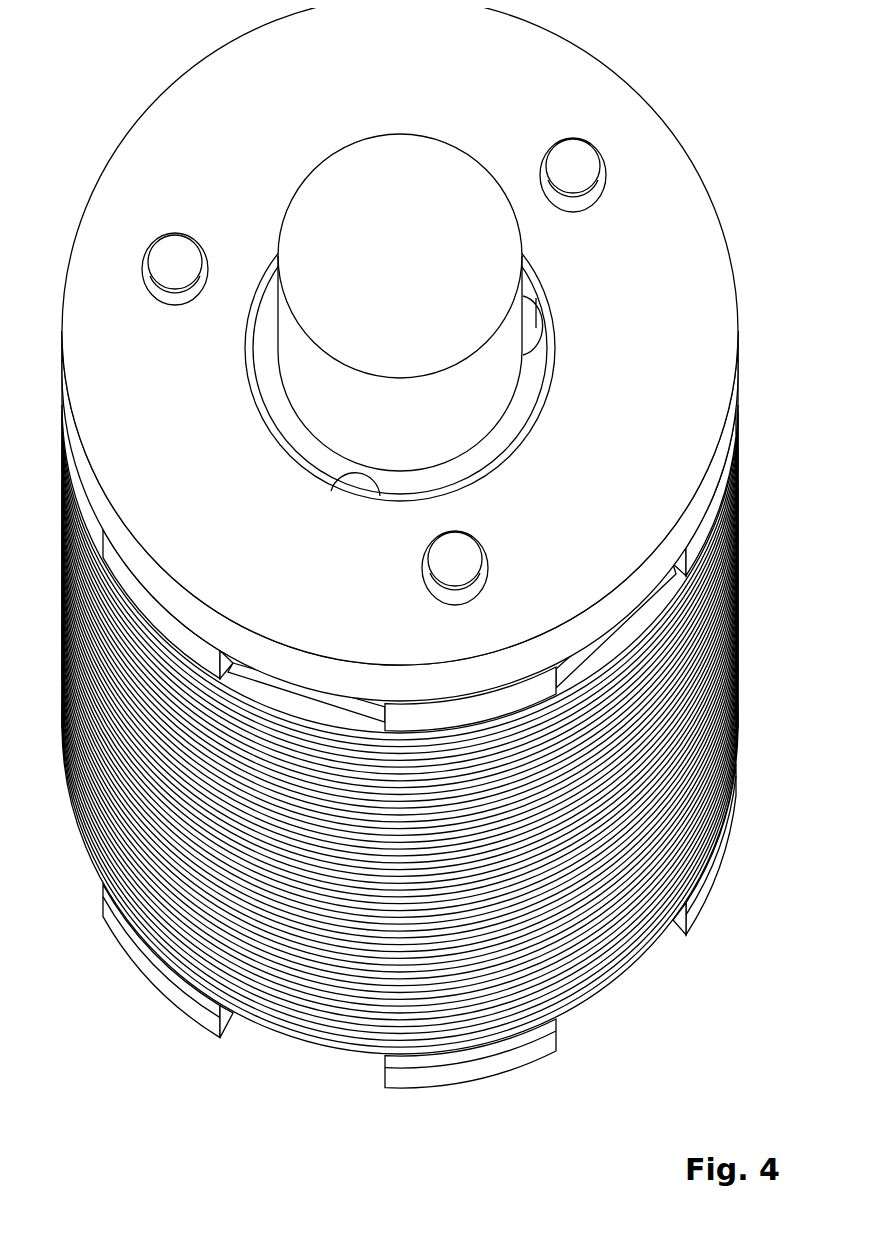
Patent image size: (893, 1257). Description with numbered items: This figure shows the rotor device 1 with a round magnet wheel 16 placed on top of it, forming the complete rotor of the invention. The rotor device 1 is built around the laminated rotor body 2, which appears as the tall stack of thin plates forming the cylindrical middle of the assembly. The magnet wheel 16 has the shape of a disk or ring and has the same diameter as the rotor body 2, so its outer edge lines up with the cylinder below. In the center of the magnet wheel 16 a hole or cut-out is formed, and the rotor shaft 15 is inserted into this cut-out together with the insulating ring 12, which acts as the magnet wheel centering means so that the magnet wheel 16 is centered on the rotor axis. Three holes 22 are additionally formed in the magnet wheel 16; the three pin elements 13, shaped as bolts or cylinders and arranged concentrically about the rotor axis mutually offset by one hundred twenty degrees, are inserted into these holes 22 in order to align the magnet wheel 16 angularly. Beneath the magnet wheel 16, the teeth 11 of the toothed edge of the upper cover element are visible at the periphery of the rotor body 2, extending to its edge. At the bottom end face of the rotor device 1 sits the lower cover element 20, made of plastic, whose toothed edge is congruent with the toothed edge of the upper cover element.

The rotor device 1 is at (135, 1053).
The rotor body 2 is at (326, 1008).
The teeth 11 is at (414, 704).
The insulating ring 12 is at (266, 384).
The pin elements 13 is at (150, 250).
The rotor shaft 15 is at (496, 266).
The magnet wheel 16 is at (641, 86).
The lower cover element 20 is at (396, 1068).
The holes 22 is at (160, 310).